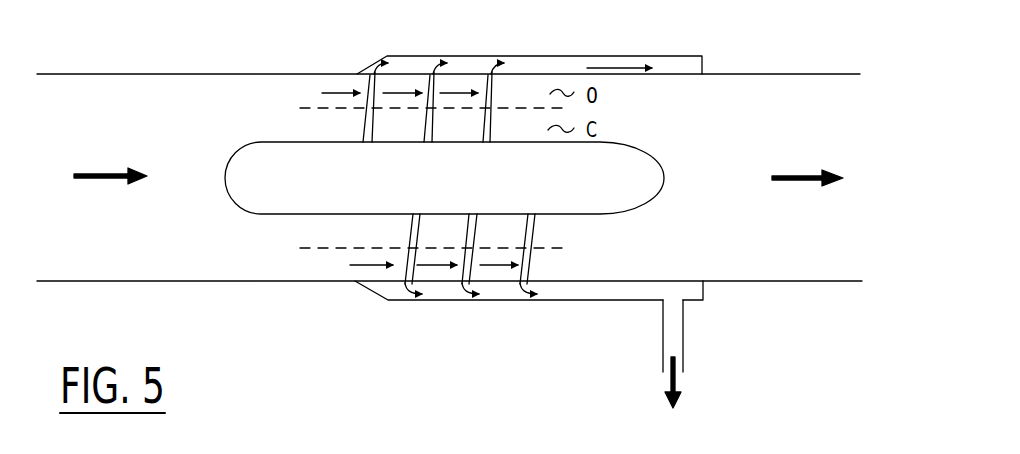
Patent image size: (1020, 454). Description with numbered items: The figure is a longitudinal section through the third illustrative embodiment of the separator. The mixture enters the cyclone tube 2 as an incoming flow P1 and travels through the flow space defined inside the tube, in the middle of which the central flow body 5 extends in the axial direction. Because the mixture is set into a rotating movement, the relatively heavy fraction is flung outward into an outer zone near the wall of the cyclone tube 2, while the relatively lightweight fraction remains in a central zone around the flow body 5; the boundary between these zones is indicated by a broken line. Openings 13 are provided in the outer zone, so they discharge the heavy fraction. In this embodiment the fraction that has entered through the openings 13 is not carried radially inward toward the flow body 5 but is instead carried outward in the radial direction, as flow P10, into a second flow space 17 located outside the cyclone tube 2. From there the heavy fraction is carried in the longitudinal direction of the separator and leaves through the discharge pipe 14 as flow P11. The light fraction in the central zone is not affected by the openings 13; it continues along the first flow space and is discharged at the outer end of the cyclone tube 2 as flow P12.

The cyclone tube 2 is at (233, 282).
The central flow body 5 is at (320, 214).
The openings 13 is at (364, 98).
The discharge pipe 14 is at (684, 345).
The second flow space 17 is at (562, 67).
The incoming mixture flow P1 is at (126, 182).
The radially outward discharge flow P10 is at (432, 64).
The longitudinal discharge flow P11 is at (677, 398).
The light fraction outlet flow P12 is at (828, 184).